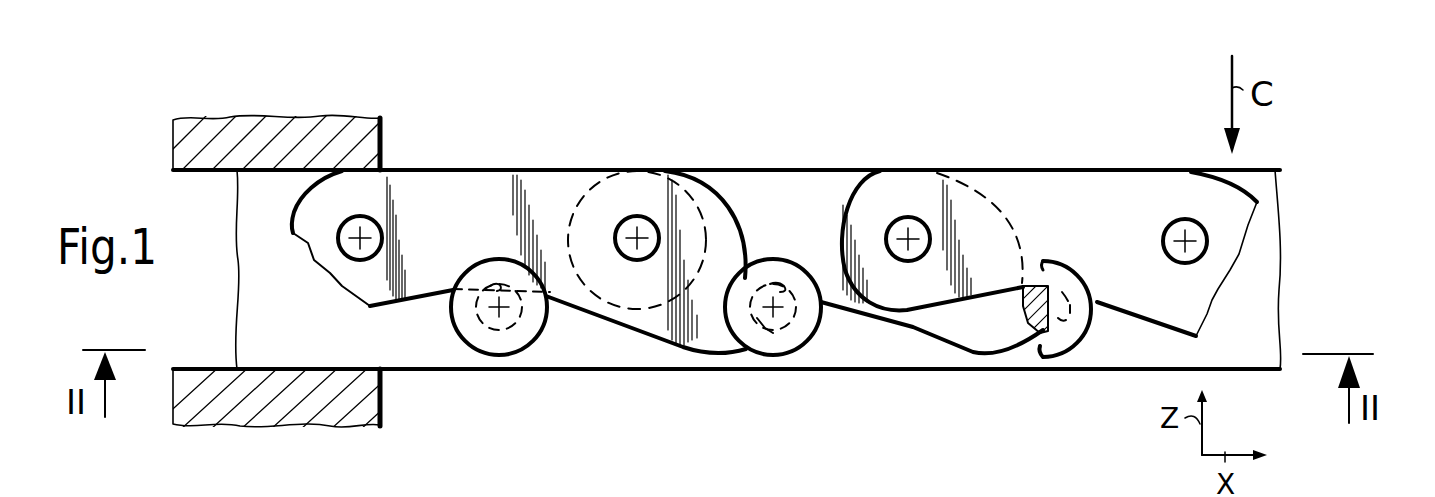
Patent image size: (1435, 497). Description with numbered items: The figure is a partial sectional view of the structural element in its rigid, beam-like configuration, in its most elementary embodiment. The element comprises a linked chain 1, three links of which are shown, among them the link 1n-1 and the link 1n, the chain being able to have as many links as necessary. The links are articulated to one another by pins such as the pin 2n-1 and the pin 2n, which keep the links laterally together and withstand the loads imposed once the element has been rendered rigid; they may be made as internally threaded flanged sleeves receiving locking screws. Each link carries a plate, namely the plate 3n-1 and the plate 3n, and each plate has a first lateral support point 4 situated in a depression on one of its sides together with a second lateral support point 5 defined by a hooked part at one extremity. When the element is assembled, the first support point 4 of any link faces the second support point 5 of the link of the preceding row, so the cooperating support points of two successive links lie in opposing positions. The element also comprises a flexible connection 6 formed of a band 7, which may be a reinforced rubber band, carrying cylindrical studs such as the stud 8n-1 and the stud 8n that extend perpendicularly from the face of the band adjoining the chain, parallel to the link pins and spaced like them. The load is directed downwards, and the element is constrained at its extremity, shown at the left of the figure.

The linked chain 1 is at (842, 332).
The first lateral support point 4 is at (493, 287).
The second lateral support point 5 is at (778, 326).
The flexible connection 6 is at (562, 323).
The band 7 is at (290, 317).
The link 1n-1 is at (498, 197).
The link 1n is at (822, 200).
The pin 2n-1 is at (352, 228).
The pin 2n is at (628, 235).
The plate 3n-1 is at (485, 229).
The plate 3n is at (808, 229).
The cylindrical stud 8n-1 is at (494, 326).
The cylindrical stud 8n is at (802, 318).